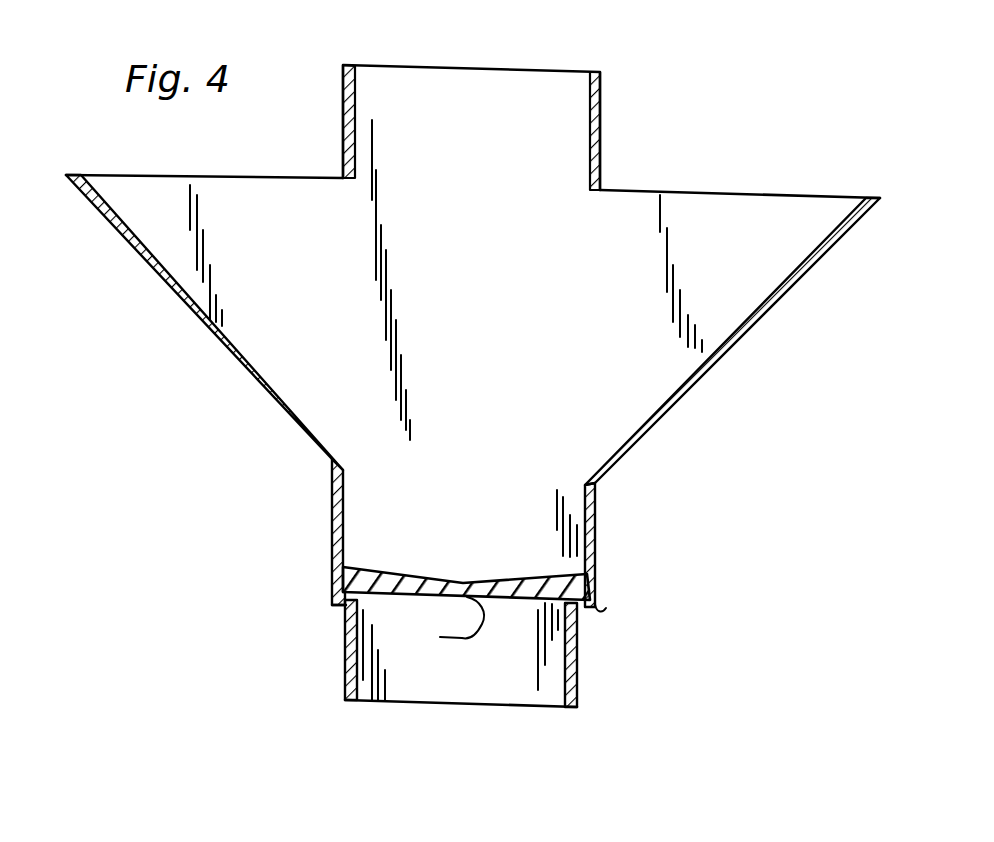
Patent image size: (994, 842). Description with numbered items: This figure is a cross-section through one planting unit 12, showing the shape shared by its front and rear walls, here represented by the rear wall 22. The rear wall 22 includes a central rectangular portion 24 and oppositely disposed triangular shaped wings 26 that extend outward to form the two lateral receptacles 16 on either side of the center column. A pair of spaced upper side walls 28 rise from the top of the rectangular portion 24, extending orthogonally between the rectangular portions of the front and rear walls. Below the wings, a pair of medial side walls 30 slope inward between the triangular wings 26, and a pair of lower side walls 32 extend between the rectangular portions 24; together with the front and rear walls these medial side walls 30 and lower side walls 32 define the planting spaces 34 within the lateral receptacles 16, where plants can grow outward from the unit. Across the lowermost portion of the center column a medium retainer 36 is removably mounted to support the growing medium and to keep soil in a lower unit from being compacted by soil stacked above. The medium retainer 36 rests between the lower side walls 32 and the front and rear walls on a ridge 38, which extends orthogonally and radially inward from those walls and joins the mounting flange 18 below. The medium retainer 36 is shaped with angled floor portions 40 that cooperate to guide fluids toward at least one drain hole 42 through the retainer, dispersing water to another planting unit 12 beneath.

The planting unit 12 is at (223, 368).
The lateral receptacle 16 is at (108, 173).
The mounting flange 18 is at (588, 659).
The rear wall 22 is at (547, 71).
The rectangular portion 24 is at (462, 112).
The triangular shaped wing 26 is at (200, 313).
The upper side wall 28 is at (344, 112).
The medial side wall 30 is at (127, 228).
The lower side wall 32 is at (333, 513).
The planting space 34 is at (252, 198).
The medium retainer 36 is at (382, 570).
The ridge 38 is at (334, 603).
The angled floor portion 40 is at (404, 576).
The drain hole 42 is at (450, 600).